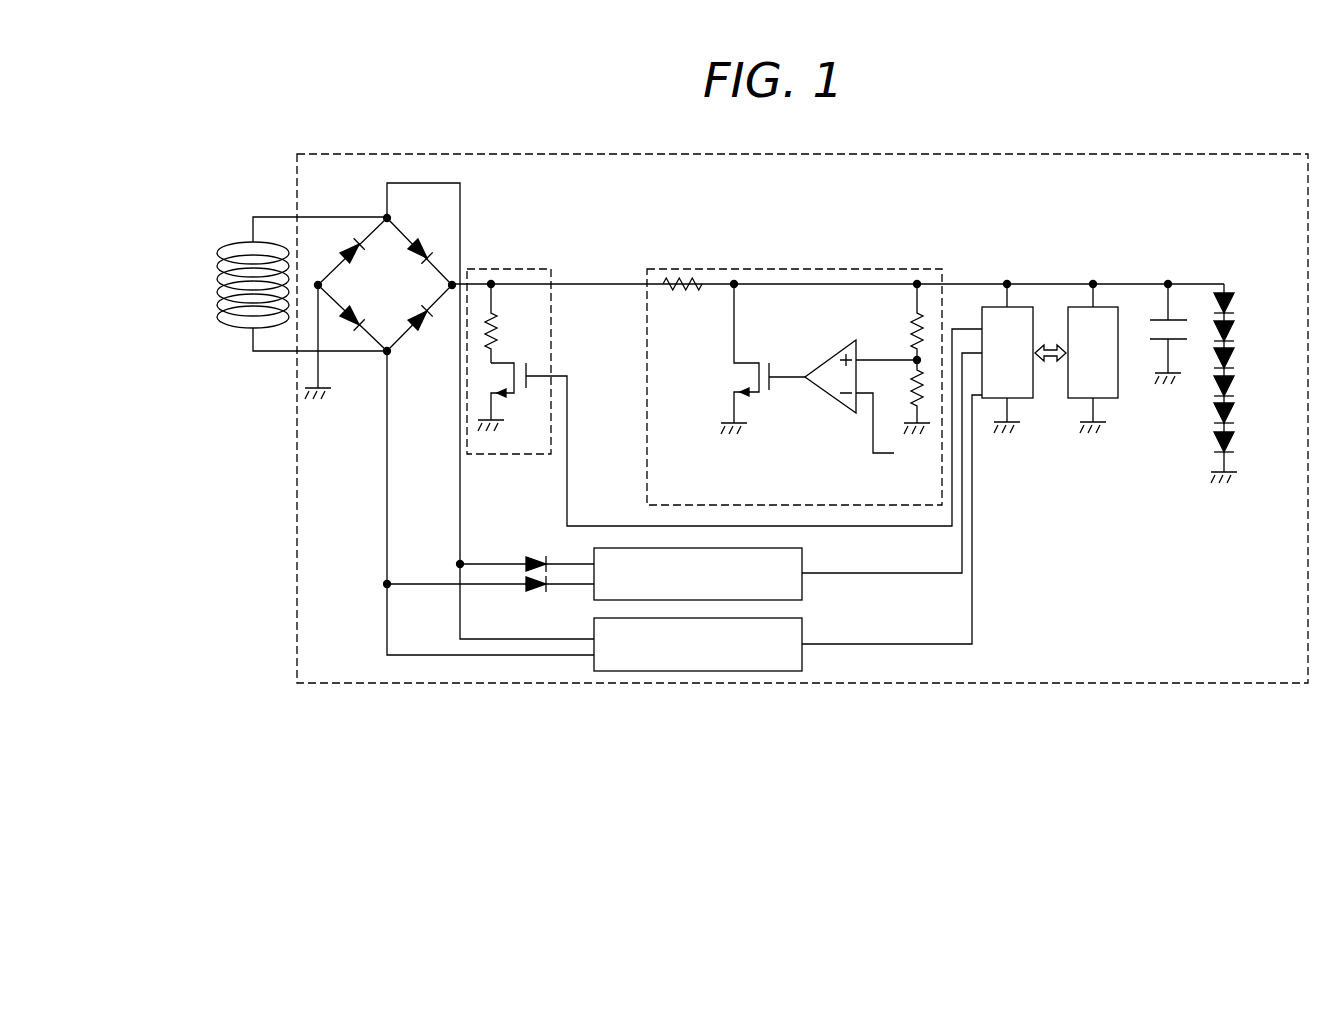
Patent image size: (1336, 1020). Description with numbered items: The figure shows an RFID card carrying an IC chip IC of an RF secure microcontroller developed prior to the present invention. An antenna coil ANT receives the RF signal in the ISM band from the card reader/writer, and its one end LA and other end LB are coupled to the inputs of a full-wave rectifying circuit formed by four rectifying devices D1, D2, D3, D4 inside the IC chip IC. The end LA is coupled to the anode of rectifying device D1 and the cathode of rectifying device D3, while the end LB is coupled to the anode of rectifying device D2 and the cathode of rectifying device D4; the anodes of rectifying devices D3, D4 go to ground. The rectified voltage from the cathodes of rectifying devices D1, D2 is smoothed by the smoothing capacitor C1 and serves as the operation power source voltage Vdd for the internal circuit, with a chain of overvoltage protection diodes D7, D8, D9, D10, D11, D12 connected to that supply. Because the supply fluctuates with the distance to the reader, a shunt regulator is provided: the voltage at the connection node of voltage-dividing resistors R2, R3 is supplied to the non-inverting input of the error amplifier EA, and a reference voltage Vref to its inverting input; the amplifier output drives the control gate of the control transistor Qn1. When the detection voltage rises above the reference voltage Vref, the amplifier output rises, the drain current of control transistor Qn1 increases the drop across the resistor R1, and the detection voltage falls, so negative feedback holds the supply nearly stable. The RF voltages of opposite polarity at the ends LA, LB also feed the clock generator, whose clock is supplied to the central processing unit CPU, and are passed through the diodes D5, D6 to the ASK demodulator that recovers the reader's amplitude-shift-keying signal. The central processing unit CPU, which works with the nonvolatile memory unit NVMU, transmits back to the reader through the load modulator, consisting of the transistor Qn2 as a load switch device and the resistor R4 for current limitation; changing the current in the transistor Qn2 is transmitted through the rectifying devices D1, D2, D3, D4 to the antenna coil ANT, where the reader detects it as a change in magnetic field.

The IC chip IC is at (802, 418).
The antenna coil ANT is at (230, 285).
The one end of the antenna coil LA is at (300, 228).
The other end of the antenna coil LB is at (300, 348).
The rectifying device D1 is at (427, 239).
The rectifying device D2 is at (427, 330).
The rectifying device D3 is at (340, 248).
The rectifying device D4 is at (349, 329).
The resistor for current limitation R4 is at (507, 323).
The transistor as load switch device Qn2 is at (730, 427).
The resistor R1 is at (682, 300).
The control transistor Qn1 is at (753, 359).
The error amplifier EA is at (828, 395).
The reference voltage Vref is at (900, 476).
The voltage-dividing resistor R2 is at (901, 322).
The voltage-dividing resistor R3 is at (905, 397).
The central processing unit CPU is at (1018, 307).
The nonvolatile memory unit NVMU is at (1104, 307).
The operation power source voltage Vdd is at (1170, 282).
The smoothing capacitor C1 is at (1177, 334).
The overvoltage protection diode D7 is at (1240, 303).
The overvoltage protection diode D8 is at (1240, 331).
The overvoltage protection diode D9 is at (1240, 358).
The overvoltage protection diode D10 is at (1246, 386).
The overvoltage protection diode D11 is at (1246, 413).
The overvoltage protection diode D12 is at (1246, 442).
The diode D5 is at (526, 551).
The diode D6 is at (489, 599).